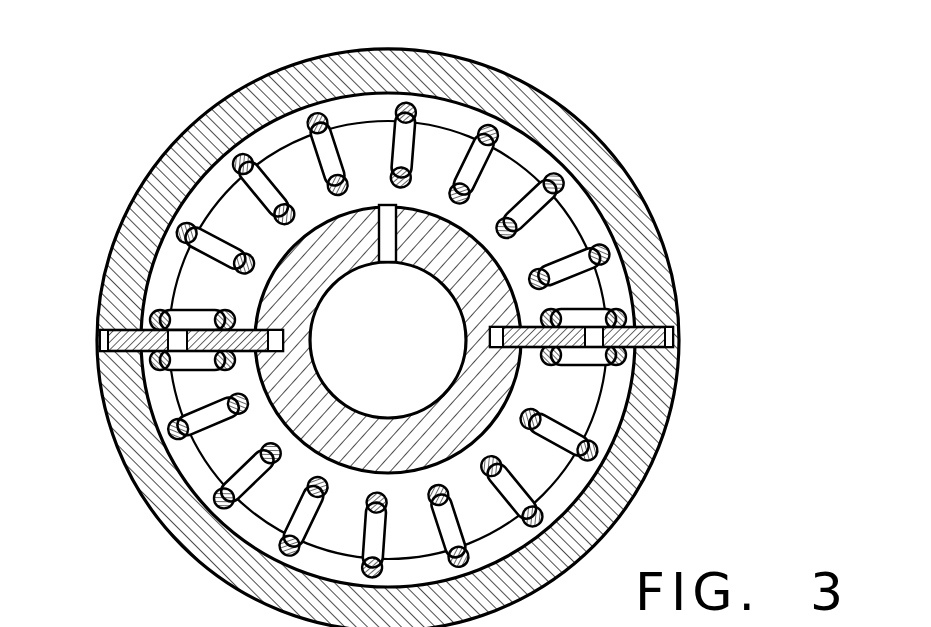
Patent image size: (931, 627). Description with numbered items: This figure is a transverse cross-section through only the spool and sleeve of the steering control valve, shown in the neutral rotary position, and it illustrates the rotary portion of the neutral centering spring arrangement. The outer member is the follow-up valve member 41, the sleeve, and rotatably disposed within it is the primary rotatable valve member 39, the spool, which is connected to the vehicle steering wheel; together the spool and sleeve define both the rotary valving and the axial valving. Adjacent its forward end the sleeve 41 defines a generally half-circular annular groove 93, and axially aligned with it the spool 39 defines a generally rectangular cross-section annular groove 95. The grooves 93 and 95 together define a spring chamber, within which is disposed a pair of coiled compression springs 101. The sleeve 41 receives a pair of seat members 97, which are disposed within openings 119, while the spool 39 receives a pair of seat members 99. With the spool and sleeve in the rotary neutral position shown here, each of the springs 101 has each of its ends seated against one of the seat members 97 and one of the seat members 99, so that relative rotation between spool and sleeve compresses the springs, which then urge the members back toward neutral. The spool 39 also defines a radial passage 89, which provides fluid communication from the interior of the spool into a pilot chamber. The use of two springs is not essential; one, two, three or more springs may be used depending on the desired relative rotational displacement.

The follow-up valve member 41 is at (617, 197).
The half-circular annular groove 93 is at (213, 181).
The coiled compression springs 101 is at (413, 112).
The rotatable valve member 39 is at (410, 446).
The radial passage 89 is at (384, 241).
The rectangular cross-section annular groove 95 is at (287, 472).
The seat members 97 is at (128, 333).
The seat members 99 is at (284, 340).
The openings 119 is at (101, 348).